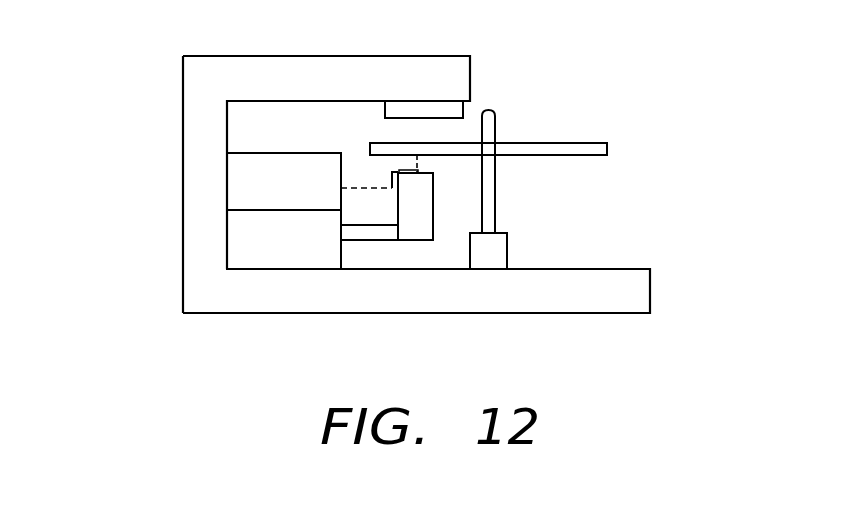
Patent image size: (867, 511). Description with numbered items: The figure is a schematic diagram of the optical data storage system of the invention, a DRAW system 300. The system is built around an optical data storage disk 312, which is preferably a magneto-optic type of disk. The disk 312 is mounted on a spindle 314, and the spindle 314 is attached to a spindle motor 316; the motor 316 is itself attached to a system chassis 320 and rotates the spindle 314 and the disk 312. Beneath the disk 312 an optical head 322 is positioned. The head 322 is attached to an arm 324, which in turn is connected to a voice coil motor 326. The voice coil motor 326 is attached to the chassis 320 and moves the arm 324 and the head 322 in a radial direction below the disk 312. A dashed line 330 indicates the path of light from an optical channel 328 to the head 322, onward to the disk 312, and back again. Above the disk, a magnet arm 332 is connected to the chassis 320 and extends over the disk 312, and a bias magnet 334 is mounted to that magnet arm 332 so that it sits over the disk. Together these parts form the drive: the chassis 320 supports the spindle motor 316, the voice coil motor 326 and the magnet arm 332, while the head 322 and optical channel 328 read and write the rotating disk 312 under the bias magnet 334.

The DRAW system 300 is at (158, 362).
The optical data storage disk 312 is at (588, 143).
The spindle 314 is at (495, 177).
The spindle motor 316 is at (497, 249).
The system chassis 320 is at (632, 291).
The optical head 322 is at (425, 201).
The arm 324 is at (374, 240).
The voice coil motor 326 is at (237, 238).
The optical channel 328 is at (237, 175).
The dashed line 330 is at (393, 183).
The magnet arm 332 is at (291, 70).
The bias magnet 334 is at (452, 108).